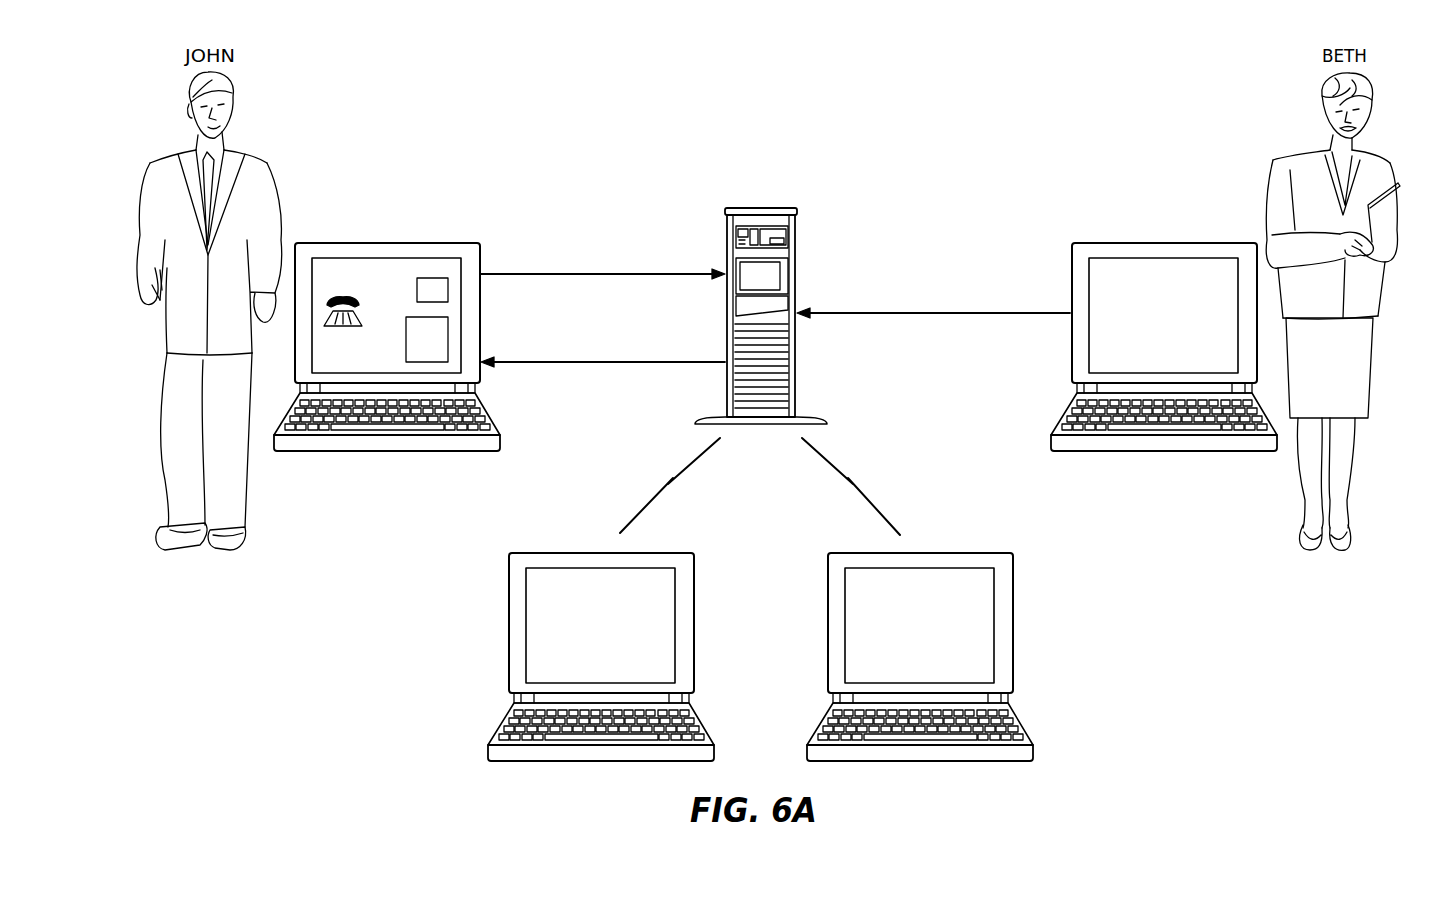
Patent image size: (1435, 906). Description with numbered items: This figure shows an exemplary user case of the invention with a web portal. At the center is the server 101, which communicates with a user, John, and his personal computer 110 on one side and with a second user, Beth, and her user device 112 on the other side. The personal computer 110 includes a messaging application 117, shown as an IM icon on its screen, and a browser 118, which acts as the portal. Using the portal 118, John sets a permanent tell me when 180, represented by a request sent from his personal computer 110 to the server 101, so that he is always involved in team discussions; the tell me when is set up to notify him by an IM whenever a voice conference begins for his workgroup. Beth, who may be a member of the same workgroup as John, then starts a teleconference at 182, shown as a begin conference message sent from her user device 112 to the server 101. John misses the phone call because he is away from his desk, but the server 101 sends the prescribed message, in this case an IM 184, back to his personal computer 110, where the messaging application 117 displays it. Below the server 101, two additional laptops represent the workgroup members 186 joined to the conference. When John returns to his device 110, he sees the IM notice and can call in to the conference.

The server 101 is at (761, 207).
The personal computer 110 is at (386, 243).
The user device 112 is at (1164, 243).
The messaging application 117 is at (406, 335).
The browser 118 is at (417, 290).
The permanent tell me when 180 is at (602, 276).
The teleconference start 182 is at (933, 316).
The IM 184 is at (602, 364).
The workgroup members 186 is at (486, 755).